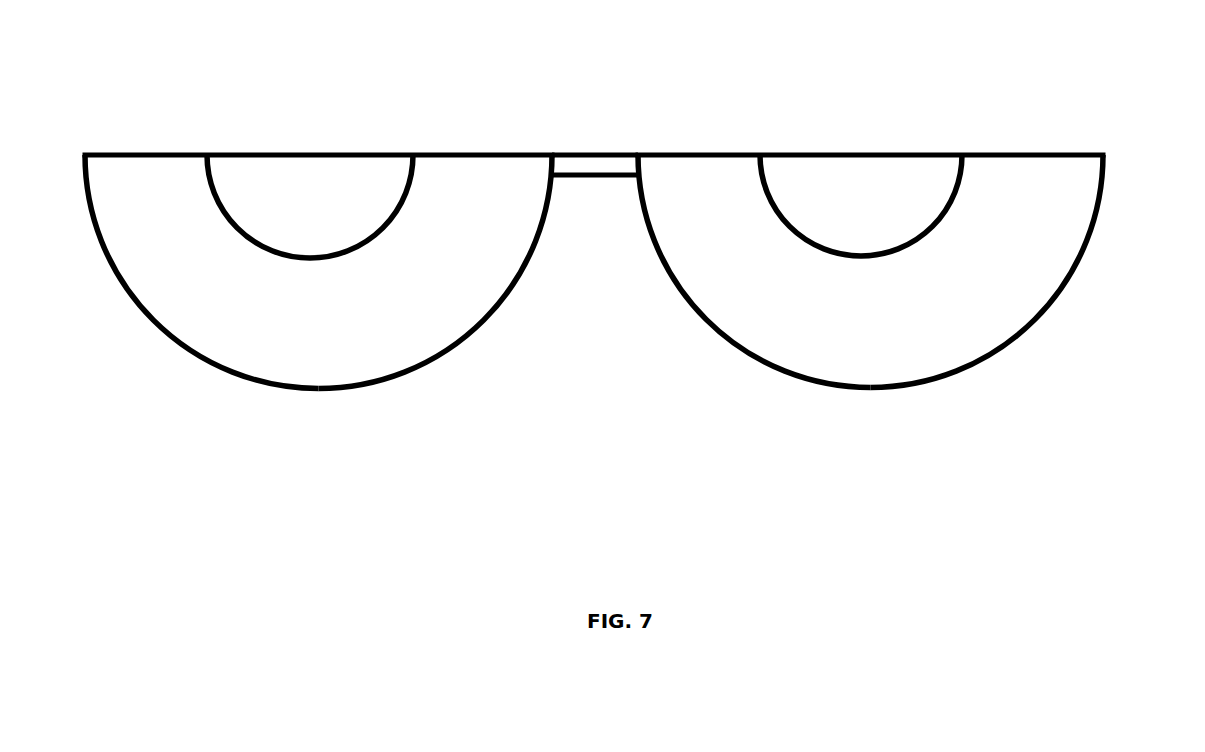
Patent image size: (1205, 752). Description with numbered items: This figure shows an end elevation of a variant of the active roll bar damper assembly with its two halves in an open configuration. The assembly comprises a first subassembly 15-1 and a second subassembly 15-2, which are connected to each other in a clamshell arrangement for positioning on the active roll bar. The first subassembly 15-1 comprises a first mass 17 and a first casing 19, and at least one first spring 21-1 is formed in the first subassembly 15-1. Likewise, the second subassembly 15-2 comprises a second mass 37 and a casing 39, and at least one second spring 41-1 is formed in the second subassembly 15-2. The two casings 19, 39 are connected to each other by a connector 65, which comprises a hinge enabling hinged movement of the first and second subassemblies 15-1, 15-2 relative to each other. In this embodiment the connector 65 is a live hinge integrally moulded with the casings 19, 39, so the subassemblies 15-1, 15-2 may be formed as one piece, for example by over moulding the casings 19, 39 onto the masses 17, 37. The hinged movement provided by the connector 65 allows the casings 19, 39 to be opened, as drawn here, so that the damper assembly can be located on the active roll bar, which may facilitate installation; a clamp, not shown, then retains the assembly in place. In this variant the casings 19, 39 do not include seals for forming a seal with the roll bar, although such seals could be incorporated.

The first subassembly 15-1 is at (915, 268).
The second subassembly 15-2 is at (300, 260).
The first mass 17 is at (880, 351).
The first casing 19 is at (1002, 300).
The first spring 21-1 is at (962, 203).
The second mass 37 is at (308, 352).
The casing of the second subassembly 39 is at (195, 305).
The second spring 41-1 is at (423, 203).
The connector 65 is at (603, 142).